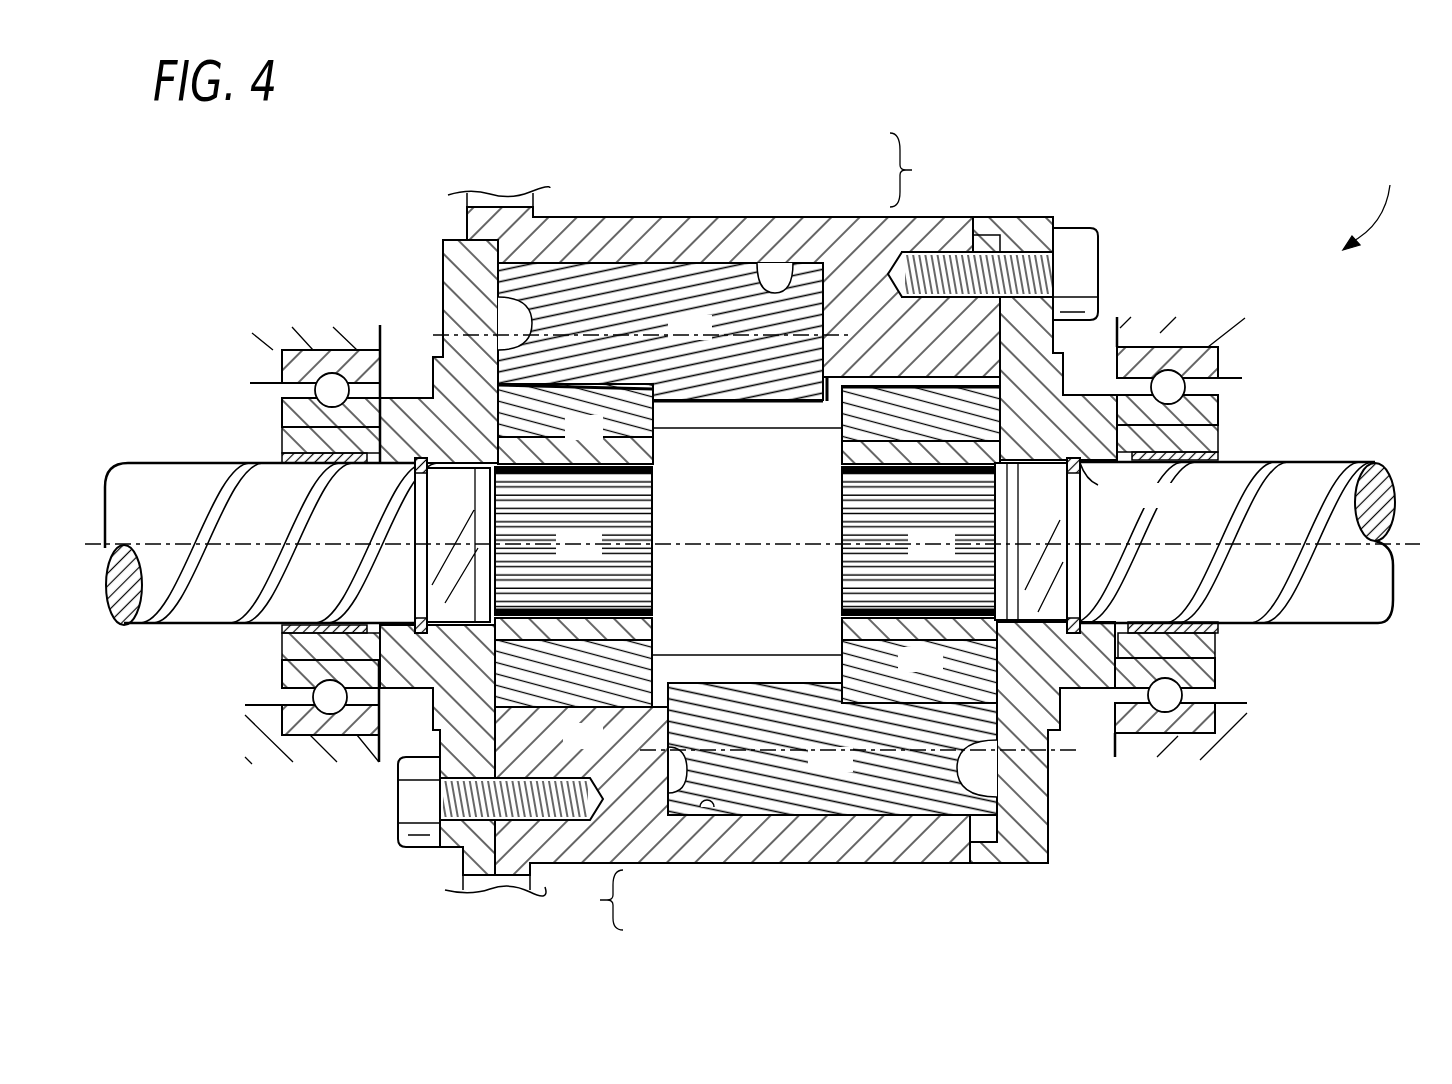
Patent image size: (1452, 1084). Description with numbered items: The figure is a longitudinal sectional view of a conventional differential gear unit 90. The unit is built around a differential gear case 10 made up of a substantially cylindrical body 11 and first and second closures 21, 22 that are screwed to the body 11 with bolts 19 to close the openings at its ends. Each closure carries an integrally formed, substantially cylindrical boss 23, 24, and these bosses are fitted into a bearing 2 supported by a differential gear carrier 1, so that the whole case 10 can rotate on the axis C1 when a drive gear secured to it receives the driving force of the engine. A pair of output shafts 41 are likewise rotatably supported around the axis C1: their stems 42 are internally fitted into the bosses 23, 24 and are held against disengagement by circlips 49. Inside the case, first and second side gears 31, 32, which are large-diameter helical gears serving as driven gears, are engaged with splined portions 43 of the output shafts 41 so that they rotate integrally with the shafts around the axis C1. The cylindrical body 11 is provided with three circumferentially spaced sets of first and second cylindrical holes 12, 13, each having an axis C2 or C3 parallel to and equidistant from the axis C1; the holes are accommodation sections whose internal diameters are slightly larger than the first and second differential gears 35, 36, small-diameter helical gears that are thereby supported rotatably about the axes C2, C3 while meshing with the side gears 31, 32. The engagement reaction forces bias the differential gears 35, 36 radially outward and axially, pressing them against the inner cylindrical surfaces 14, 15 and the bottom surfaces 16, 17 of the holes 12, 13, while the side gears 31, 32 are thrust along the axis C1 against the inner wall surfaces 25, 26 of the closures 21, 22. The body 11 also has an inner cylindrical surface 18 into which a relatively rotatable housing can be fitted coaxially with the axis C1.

The differential gear carrier 1 is at (313, 332).
The bearing 2 is at (277, 367).
The differential gear case 10 is at (1054, 216).
The cylindrical body 11 is at (947, 227).
The first cylindrical hole 12 is at (921, 170).
The second cylindrical hole 13 is at (595, 900).
The inner cylindrical surface 14 is at (845, 333).
The inner cylindrical surface 15 is at (693, 813).
The bottom surface 16 is at (803, 268).
The bottom surface 17 is at (700, 800).
The inner cylindrical surface 18 is at (600, 690).
The bolts 19 is at (1073, 263).
The first closure 21 is at (1037, 340).
The second closure 22 is at (460, 257).
The boss 23 is at (1190, 442).
The boss 24 is at (322, 445).
The inner wall surface 25 is at (1048, 832).
The inner wall surface 26 is at (500, 323).
The first side gear 31 is at (645, 437).
The second side gear 32 is at (913, 540).
The first differential gear 35 is at (660, 332).
The second differential gear 36 is at (832, 749).
The output shafts 41 is at (207, 626).
The stems 42 is at (750, 543).
The splined portions 43 is at (745, 541).
The circlips 49 is at (417, 463).
The differential gear unit 90 is at (1415, 178).
The axis C1 is at (1420, 540).
The axis C2 is at (433, 333).
The axis C3 is at (1083, 750).